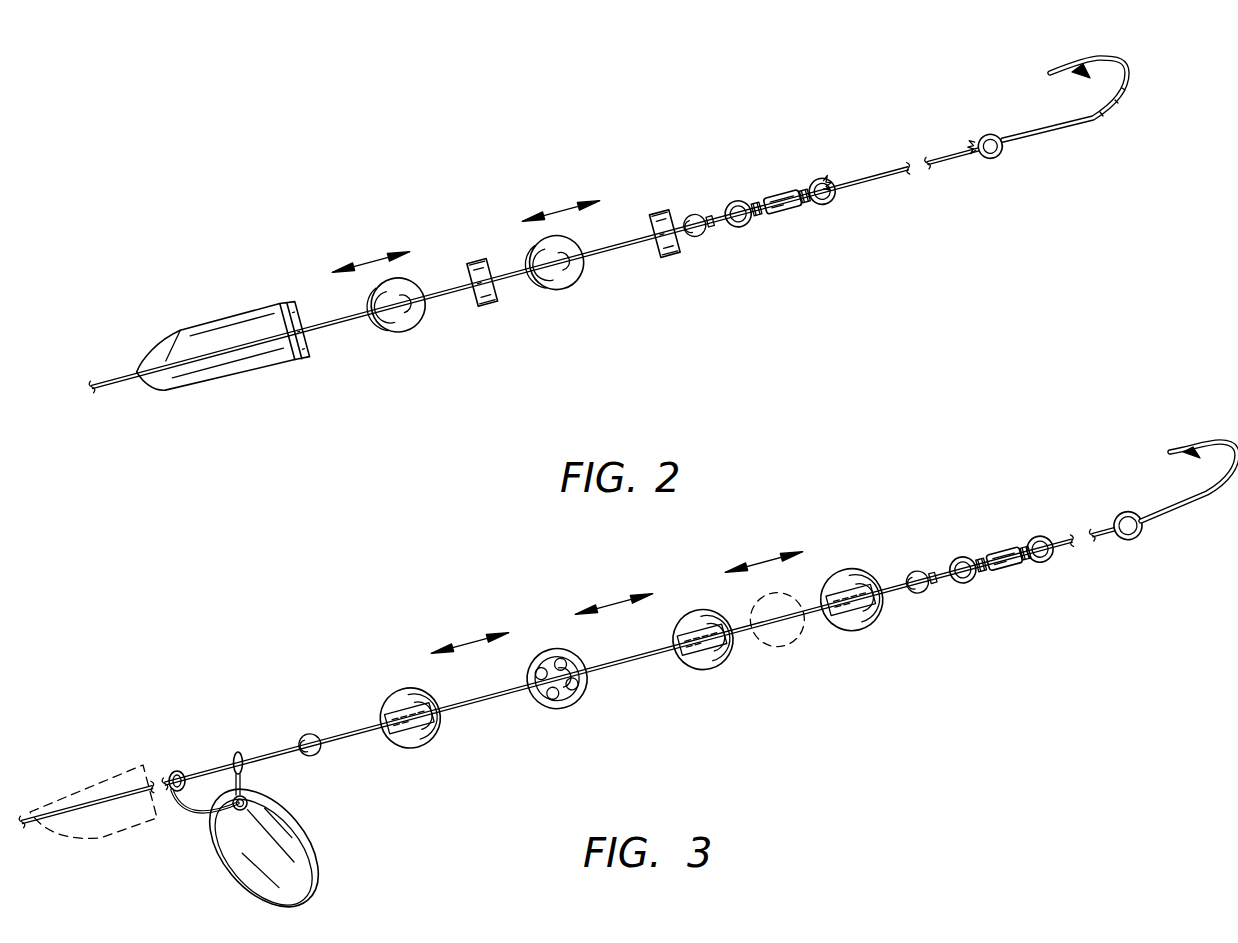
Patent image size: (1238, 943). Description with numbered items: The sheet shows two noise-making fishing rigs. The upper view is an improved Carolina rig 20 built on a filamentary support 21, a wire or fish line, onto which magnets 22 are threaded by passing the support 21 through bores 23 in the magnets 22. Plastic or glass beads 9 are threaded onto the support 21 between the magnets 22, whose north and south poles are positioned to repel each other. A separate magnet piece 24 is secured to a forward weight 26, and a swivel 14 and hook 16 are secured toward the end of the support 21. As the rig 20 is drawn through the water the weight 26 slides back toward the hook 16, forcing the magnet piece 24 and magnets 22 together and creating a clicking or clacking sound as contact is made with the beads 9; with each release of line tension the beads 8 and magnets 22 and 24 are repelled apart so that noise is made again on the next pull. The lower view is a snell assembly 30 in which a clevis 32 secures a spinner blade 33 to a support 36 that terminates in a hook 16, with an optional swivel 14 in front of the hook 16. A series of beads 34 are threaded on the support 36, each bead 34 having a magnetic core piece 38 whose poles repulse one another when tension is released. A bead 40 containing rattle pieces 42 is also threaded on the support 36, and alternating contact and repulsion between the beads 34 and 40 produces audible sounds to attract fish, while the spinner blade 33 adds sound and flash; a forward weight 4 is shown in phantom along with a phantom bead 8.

In FIG. 3, the forward weight 4 is at (97, 840).
In FIG. 3, the bead 8 is at (787, 647).
In FIG. 2, the plastic or glass bead 9 is at (407, 332).
In FIG. 2, the swivel 14 is at (780, 213).
In FIG. 3, the swivel 14 is at (1000, 547).
In FIG. 2, the hook 16 is at (1063, 133).
In FIG. 3, the hook 16 is at (1207, 493).
In FIG. 2, the improved Carolina rig 20 is at (428, 217).
In FIG. 2, the filamentary support 21 is at (120, 388).
In FIG. 2, the magnet 22 is at (492, 307).
In FIG. 2, the bore 23 is at (475, 292).
In FIG. 2, the magnet piece 24 is at (307, 357).
In FIG. 2, the forward weight 26 is at (223, 387).
In FIG. 3, the snell assembly 30 is at (305, 693).
In FIG. 3, the clevis 32 is at (182, 772).
In FIG. 3, the spinner blade 33 is at (303, 908).
In FIG. 3, the bead 34 is at (410, 747).
In FIG. 3, the support 36 is at (483, 703).
In FIG. 3, the magnetic core piece 38 is at (402, 712).
In FIG. 3, the bead 40 is at (570, 708).
In FIG. 3, the rattle piece 42 is at (560, 657).